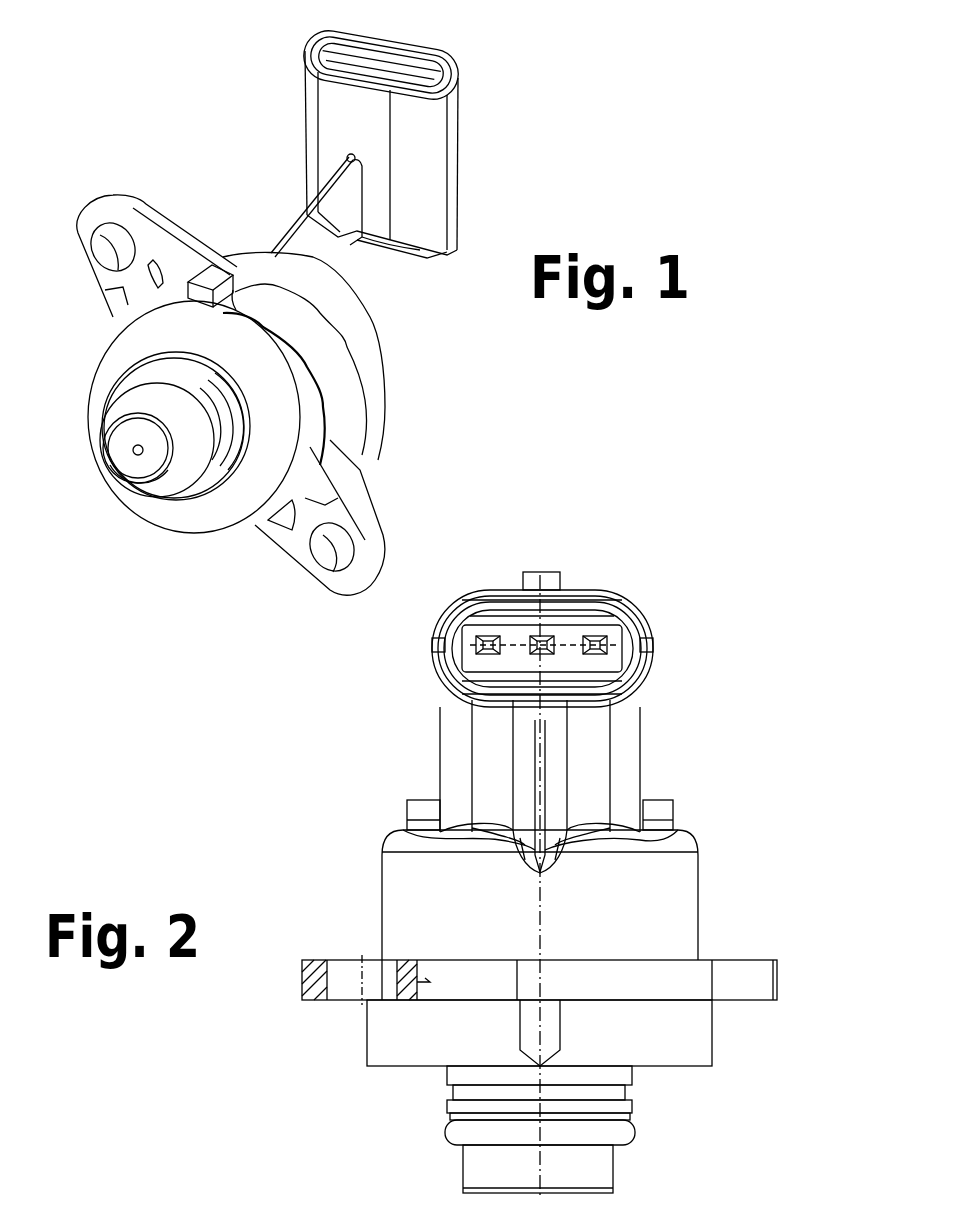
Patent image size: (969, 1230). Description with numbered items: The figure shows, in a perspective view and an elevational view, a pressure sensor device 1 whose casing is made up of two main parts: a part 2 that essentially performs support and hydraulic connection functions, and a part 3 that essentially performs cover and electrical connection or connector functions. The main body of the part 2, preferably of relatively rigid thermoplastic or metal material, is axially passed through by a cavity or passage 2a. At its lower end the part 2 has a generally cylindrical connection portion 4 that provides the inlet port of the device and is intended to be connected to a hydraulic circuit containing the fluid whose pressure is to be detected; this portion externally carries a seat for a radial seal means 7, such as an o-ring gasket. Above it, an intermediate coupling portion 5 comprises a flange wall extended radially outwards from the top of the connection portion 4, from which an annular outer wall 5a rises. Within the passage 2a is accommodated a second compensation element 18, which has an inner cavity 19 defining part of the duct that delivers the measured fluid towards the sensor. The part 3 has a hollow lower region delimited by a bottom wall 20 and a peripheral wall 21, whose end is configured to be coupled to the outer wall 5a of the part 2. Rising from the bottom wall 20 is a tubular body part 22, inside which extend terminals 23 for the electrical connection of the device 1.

In FIG. 1, the pressure sensor device 1 is at (186, 118).
In FIG. 2, the pressure sensor device 1 is at (266, 816).
In FIG. 1, the part 2 is at (198, 546).
In FIG. 2, the part 2 is at (328, 1068).
In FIG. 1, the cavity or passage 2a is at (130, 490).
In FIG. 1, the part 3 is at (398, 337).
In FIG. 2, the part 3 is at (381, 830).
In FIG. 1, the connection portion 4 is at (172, 405).
In FIG. 2, the connection portion 4 is at (610, 1168).
In FIG. 1, the intermediate coupling portion 5 is at (270, 458).
In FIG. 2, the intermediate coupling portion 5 is at (665, 1068).
In FIG. 1, the outer wall 5a is at (312, 397).
In FIG. 2, the outer wall 5a is at (685, 1032).
In FIG. 1, the radial seal means 7 is at (126, 382).
In FIG. 2, the radial seal means 7 is at (455, 1133).
In FIG. 1, the second compensation element 18 is at (122, 440).
In FIG. 1, the inner cavity 19 is at (136, 454).
In FIG. 2, the bottom wall 20 is at (668, 832).
In FIG. 1, the peripheral wall 21 is at (365, 375).
In FIG. 2, the peripheral wall 21 is at (672, 905).
In FIG. 1, the tubular body part 22 is at (430, 158).
In FIG. 2, the tubular body part 22 is at (620, 597).
In FIG. 2, the terminals 23 is at (490, 638).